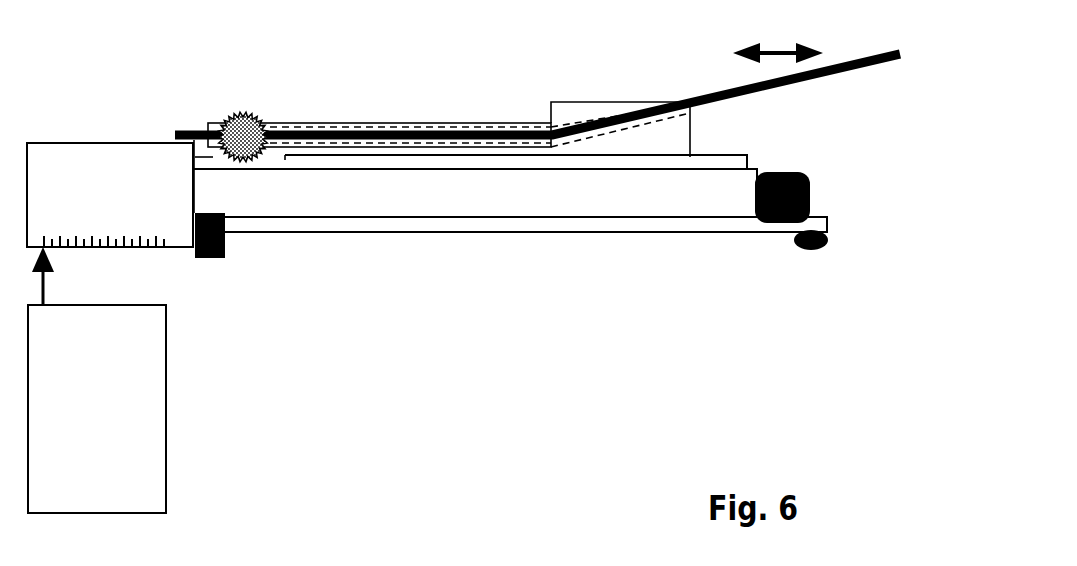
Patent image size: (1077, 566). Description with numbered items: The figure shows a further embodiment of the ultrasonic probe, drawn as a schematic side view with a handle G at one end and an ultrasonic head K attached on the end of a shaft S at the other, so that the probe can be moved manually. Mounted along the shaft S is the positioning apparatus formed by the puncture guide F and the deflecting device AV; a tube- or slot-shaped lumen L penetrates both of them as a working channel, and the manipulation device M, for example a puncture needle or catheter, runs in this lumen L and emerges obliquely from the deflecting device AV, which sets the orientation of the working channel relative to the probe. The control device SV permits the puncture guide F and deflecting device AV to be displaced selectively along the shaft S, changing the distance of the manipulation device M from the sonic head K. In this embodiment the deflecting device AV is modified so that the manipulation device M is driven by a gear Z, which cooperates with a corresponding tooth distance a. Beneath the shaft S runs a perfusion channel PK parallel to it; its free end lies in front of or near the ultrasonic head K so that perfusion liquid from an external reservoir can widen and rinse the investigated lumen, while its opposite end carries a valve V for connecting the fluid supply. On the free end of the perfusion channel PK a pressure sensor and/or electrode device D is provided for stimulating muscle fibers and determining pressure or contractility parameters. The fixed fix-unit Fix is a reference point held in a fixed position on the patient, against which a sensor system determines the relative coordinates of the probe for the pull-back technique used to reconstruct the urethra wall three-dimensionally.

The handle G is at (92, 155).
The fixed fix-unit Fix is at (97, 380).
The valve V is at (222, 258).
The shaft S is at (669, 205).
The perfusion channel PK is at (472, 227).
The ultrasonic head K is at (803, 180).
The electrode device D is at (815, 250).
The puncture guide F is at (462, 122).
The lumen L is at (527, 125).
The deflecting device AV is at (569, 115).
The manipulation device M is at (763, 83).
The gear Z is at (227, 117).
The tooth distance a is at (270, 160).
The control device SV is at (267, 48).